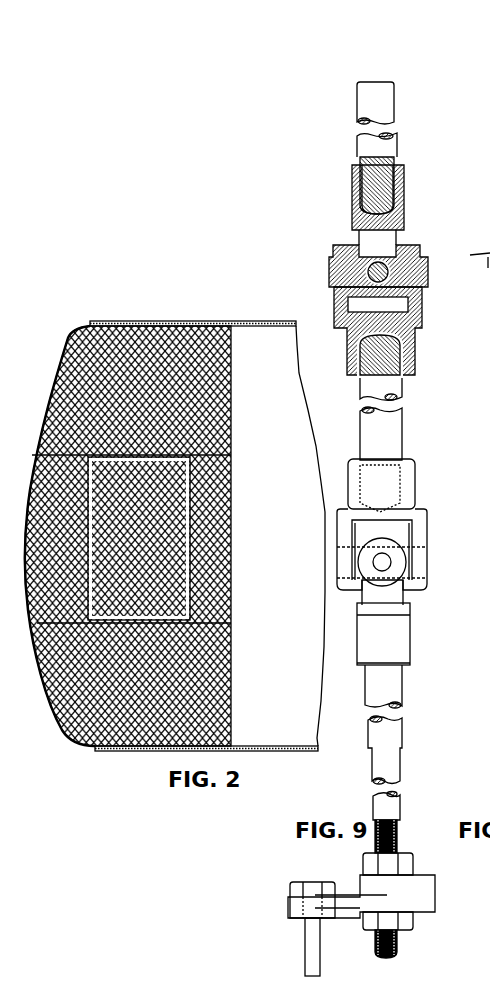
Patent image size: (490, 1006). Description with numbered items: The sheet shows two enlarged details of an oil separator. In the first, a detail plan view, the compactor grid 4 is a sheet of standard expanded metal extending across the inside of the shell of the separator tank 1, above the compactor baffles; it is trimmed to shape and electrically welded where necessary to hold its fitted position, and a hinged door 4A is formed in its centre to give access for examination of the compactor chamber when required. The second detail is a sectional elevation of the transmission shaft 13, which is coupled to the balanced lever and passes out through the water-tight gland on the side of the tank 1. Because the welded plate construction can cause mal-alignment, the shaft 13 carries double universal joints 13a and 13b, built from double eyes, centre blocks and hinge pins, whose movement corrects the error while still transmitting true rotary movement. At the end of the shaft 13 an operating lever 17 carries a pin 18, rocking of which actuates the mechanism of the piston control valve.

In FIG. 2, the shell of separator tank 1 is at (210, 325).
In FIG. 2, the compactor grid 4 is at (88, 392).
In FIG. 2, the hinged door 4A is at (155, 535).
In FIG. 9, the transmission shaft 13 is at (489, 420).
In FIG. 9, the universal joint 13a is at (489, 513).
In FIG. 9, the universal joint 13b is at (425, 263).
In FIG. 9, the operating lever 17 is at (426, 893).
In FIG. 9, the pin 18 is at (312, 936).